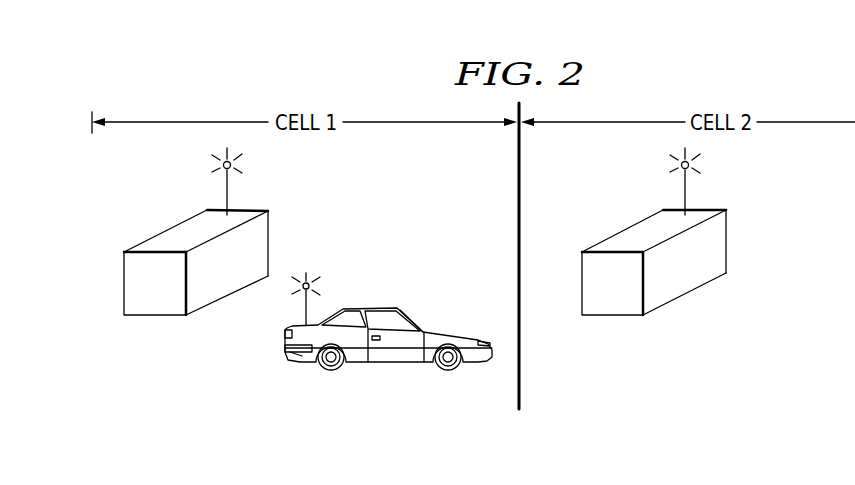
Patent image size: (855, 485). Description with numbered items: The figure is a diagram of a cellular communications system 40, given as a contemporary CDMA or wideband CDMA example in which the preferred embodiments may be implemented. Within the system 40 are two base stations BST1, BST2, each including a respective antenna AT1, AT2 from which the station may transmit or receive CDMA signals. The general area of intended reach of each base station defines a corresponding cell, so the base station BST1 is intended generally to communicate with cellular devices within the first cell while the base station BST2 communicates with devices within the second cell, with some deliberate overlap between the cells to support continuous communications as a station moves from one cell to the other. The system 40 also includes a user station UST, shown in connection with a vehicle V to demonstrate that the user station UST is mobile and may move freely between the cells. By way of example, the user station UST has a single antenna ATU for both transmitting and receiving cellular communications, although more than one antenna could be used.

The antenna AT1 is at (227, 195).
The base station BST1 is at (196, 262).
The antenna AT2 is at (685, 195).
The base station BST2 is at (654, 262).
The antenna ATU is at (301, 303).
The user station UST is at (388, 358).
The vehicle V is at (388, 345).
The cellular communications system 40 is at (793, 321).